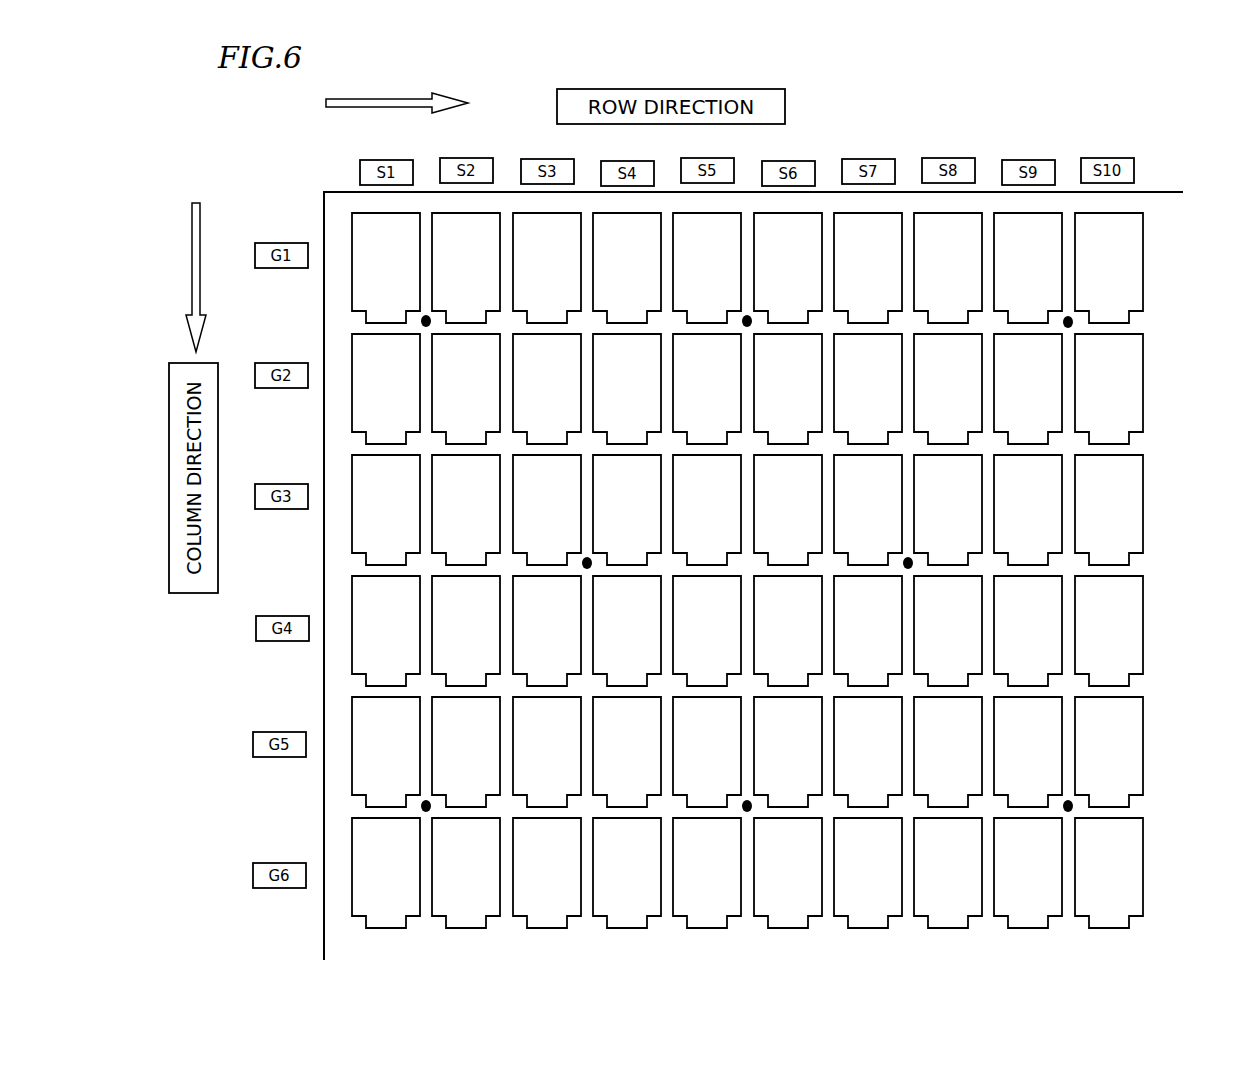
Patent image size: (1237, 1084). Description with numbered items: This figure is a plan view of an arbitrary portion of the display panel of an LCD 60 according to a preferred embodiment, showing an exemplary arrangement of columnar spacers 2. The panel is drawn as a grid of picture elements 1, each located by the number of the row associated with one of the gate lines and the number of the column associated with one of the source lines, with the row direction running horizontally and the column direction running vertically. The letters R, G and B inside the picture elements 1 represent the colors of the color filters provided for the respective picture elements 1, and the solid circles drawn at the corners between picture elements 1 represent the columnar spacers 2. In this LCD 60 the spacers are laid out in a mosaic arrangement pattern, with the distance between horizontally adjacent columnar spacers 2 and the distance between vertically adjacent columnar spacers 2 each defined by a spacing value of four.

The LCD 60 is at (1157, 152).
The picture element 1 is at (1137, 285).
The columnar spacer 2 is at (1076, 323).